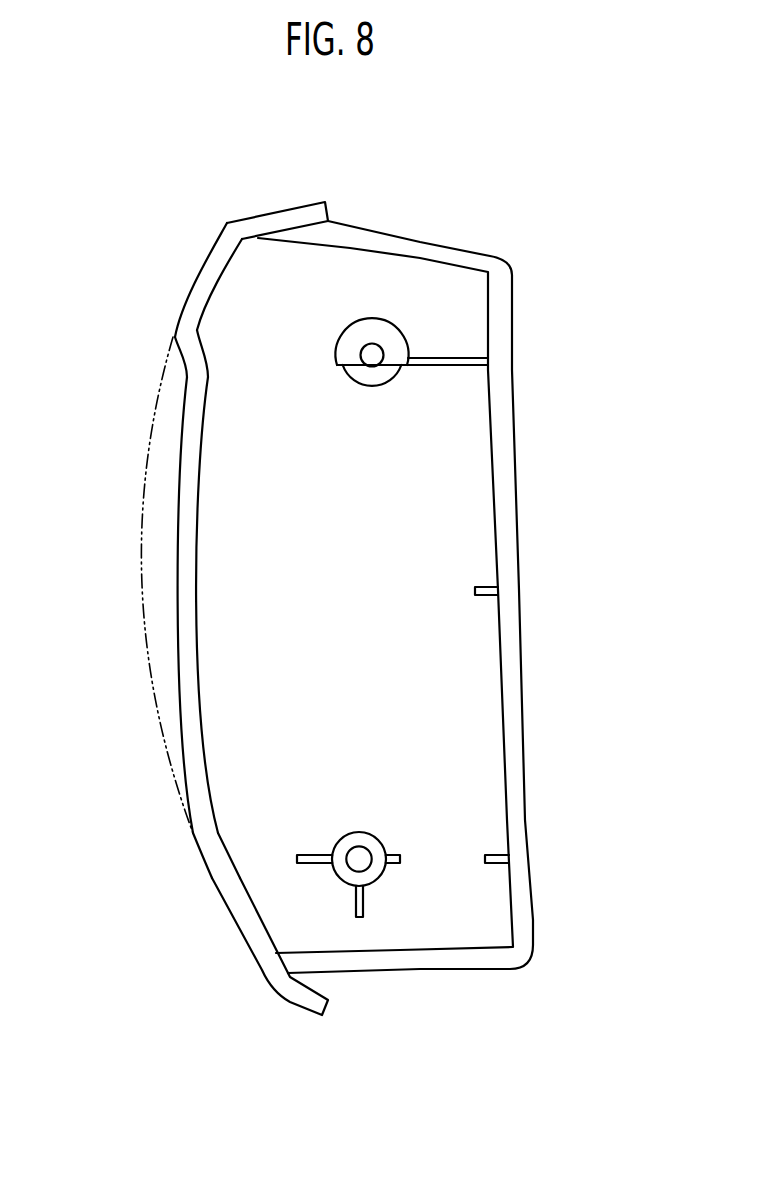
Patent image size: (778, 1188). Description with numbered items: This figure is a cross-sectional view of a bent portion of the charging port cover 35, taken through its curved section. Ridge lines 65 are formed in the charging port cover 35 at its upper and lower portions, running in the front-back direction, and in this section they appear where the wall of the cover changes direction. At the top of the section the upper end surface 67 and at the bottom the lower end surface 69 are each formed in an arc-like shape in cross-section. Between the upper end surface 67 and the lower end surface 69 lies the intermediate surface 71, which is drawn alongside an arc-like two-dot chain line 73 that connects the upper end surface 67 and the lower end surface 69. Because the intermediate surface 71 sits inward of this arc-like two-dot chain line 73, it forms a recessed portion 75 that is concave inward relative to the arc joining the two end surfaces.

The charging port cover 35 is at (452, 200).
The ridge lines 65 is at (174, 337).
The upper end surface 67 is at (199, 272).
The lower end surface 69 is at (238, 927).
The intermediate surface 71 is at (176, 527).
The recessed portion 75 is at (243, 528).
The arc-like two-dot chain line 73 is at (143, 575).